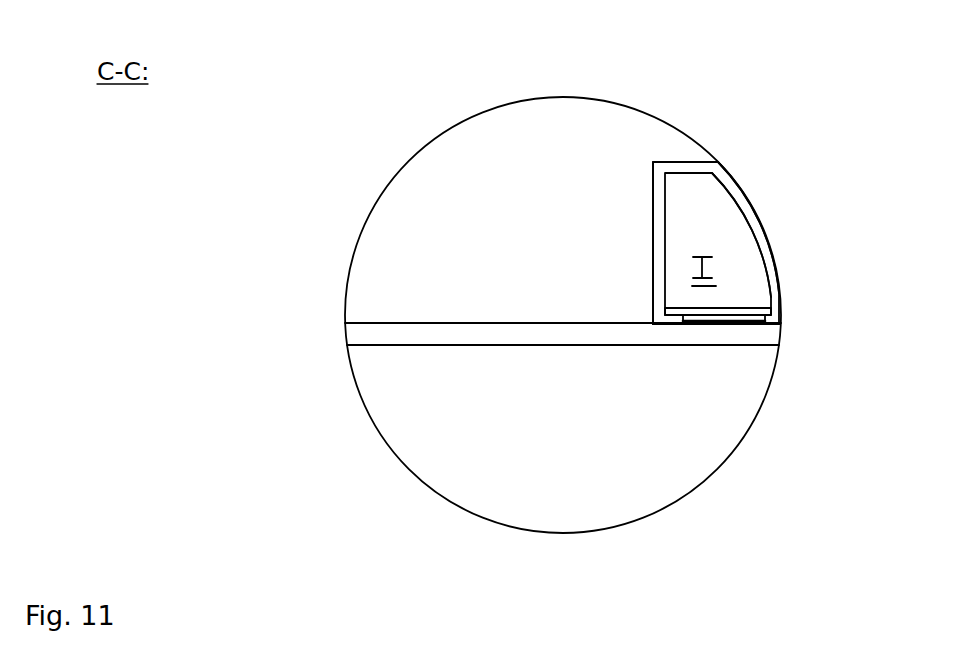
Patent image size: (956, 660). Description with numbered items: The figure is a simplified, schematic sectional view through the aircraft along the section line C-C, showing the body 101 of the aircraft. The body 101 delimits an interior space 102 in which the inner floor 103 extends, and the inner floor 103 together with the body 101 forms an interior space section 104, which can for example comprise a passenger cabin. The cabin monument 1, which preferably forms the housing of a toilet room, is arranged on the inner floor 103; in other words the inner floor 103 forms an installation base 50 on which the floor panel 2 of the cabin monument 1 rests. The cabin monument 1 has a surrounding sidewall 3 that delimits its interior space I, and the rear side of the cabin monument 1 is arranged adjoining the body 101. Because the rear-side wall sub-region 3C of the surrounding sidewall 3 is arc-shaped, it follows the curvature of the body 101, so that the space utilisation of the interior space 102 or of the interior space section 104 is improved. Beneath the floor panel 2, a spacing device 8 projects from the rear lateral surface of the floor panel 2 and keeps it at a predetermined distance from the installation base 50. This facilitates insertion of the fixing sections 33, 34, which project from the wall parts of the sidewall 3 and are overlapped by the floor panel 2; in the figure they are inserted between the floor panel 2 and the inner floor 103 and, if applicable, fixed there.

The cabin monument 1 is at (688, 158).
The floor panel 2 is at (747, 310).
The surrounding sidewall 3 is at (652, 246).
The wall sub-region 3C is at (750, 216).
The spacing device 8 is at (722, 321).
The fixing section 33 is at (670, 322).
The fixing section 34 is at (745, 490).
The installation base 50 is at (367, 337).
The body 101 is at (625, 102).
The interior space 102 is at (505, 189).
The inner floor 103 is at (497, 337).
The interior space section 104 is at (490, 281).